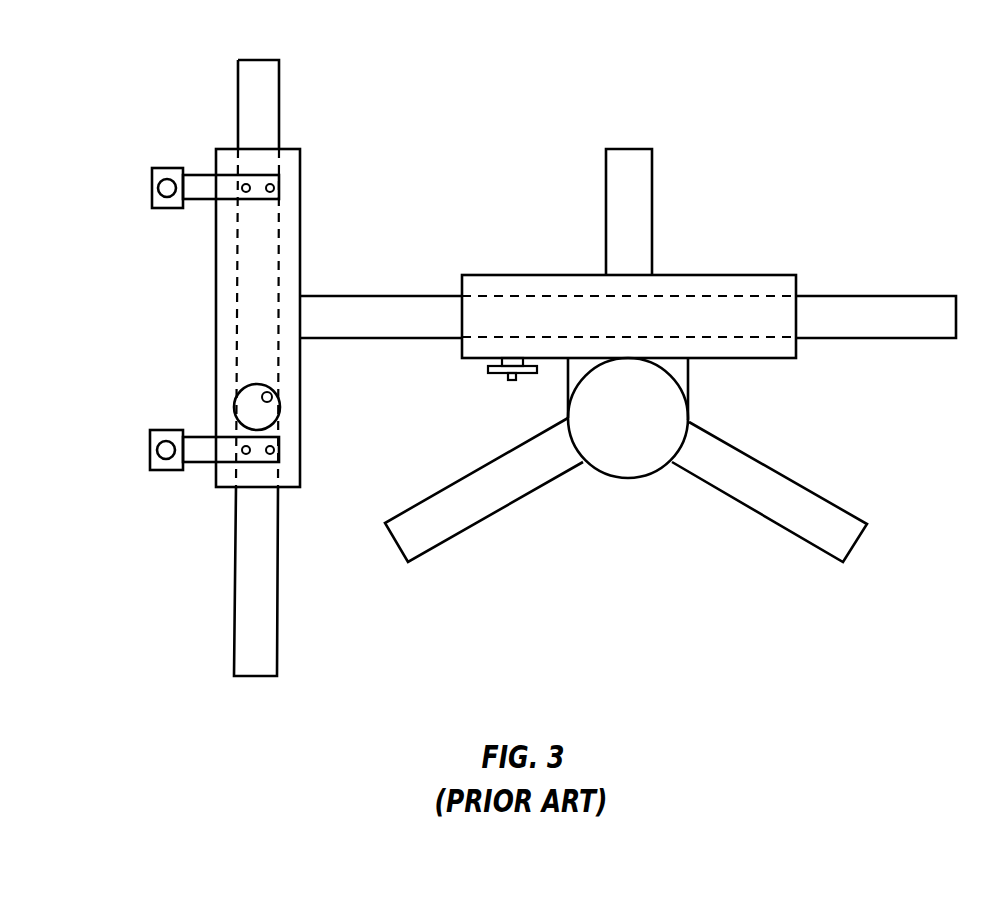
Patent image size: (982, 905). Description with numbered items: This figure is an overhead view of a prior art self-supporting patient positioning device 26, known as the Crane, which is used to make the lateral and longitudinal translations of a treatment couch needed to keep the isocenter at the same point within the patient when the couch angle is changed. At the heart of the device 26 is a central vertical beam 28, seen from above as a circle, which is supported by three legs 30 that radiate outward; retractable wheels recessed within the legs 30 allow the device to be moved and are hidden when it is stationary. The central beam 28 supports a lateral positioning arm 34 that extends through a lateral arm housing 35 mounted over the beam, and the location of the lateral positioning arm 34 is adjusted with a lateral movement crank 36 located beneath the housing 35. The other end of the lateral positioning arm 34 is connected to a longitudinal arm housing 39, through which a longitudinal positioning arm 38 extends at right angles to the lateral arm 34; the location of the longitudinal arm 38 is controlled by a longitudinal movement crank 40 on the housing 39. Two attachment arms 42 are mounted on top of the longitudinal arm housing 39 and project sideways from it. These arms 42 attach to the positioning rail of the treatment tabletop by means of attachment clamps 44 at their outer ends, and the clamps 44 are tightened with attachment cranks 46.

The positioning device 26 is at (845, 123).
The central vertical beam 28 is at (611, 433).
The legs 30 is at (606, 195).
The lateral positioning arm 34 is at (885, 295).
The lateral arm housing 35 is at (753, 274).
The lateral movement crank 36 is at (507, 378).
The longitudinal positioning arm 38 is at (235, 587).
The longitudinal arm housing 39 is at (218, 490).
The longitudinal movement crank 40 is at (255, 385).
The attachment arms 42 is at (198, 175).
The attachment clamps 44 is at (168, 168).
The attachment cranks 46 is at (162, 182).